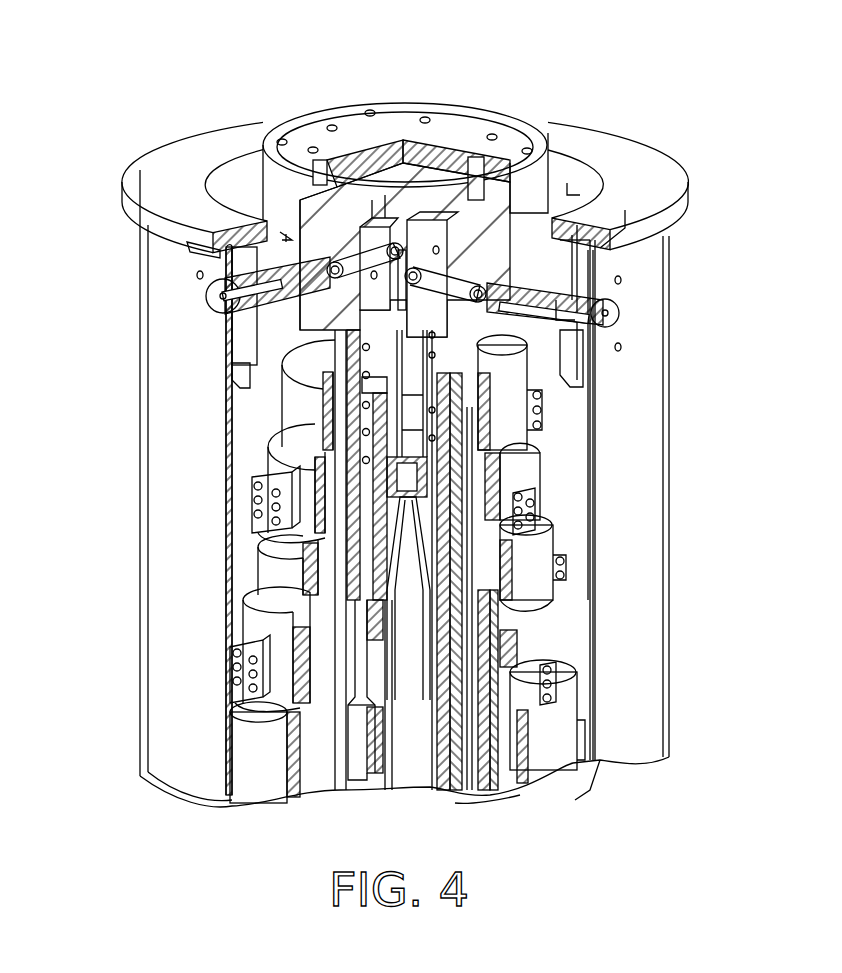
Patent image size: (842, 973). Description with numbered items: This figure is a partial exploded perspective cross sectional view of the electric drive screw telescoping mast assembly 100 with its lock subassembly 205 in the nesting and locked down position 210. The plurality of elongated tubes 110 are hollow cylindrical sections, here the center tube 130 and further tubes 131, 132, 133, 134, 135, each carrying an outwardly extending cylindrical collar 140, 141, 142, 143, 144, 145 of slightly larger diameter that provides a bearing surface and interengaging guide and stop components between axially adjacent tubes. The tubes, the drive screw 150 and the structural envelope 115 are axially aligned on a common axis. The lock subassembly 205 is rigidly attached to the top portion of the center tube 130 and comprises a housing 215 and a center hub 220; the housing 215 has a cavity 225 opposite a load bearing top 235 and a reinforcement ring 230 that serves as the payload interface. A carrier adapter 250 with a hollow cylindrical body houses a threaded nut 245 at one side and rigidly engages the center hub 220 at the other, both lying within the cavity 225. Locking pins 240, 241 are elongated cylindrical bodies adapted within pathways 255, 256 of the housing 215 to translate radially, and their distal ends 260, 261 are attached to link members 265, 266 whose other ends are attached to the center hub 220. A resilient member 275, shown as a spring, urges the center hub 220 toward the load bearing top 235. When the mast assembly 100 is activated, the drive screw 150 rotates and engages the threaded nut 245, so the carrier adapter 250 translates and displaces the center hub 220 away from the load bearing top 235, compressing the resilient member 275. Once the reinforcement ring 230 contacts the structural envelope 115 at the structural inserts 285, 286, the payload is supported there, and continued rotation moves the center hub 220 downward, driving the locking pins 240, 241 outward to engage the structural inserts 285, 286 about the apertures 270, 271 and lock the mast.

The mast assembly 100 is at (668, 78).
The plurality of elongated tubes 110 is at (455, 800).
The structural envelope 115 is at (143, 670).
The center tube 130 is at (335, 342).
The elongated tube 131 is at (473, 392).
The elongated tube 132 is at (483, 473).
The elongated tube 133 is at (533, 585).
The elongated tube 134 is at (553, 667).
The elongated tube 135 is at (560, 752).
The cylindrical collar 140 is at (483, 350).
The cylindrical collar 141 is at (510, 422).
The cylindrical collar 142 is at (543, 490).
The cylindrical collar 143 is at (503, 645).
The cylindrical collar 144 is at (513, 727).
The cylindrical collar 145 is at (593, 770).
The drive screw 150 is at (403, 710).
The lock subassembly 205 is at (620, 182).
The locked down position 210 is at (178, 80).
The housing 215 is at (285, 237).
The center hub 220 is at (272, 447).
The cavity 225 is at (440, 180).
The reinforcement ring 230 is at (148, 160).
The load bearing top 235 is at (360, 198).
The locking pin 240 is at (212, 281).
The locking pin 241 is at (612, 320).
The threaded nut 245 is at (393, 778).
The carrier adapter 250 is at (370, 660).
The pathway 255 is at (126, 188).
The pathway 256 is at (607, 303).
The distal end 260 is at (362, 160).
The distal end 261 is at (575, 185).
The link member 265 is at (414, 186).
The link member 266 is at (510, 207).
The aperture 270 is at (205, 302).
The aperture 271 is at (612, 328).
The resilient member 275 is at (390, 405).
The structural insert 285 is at (190, 244).
The structural insert 286 is at (612, 222).